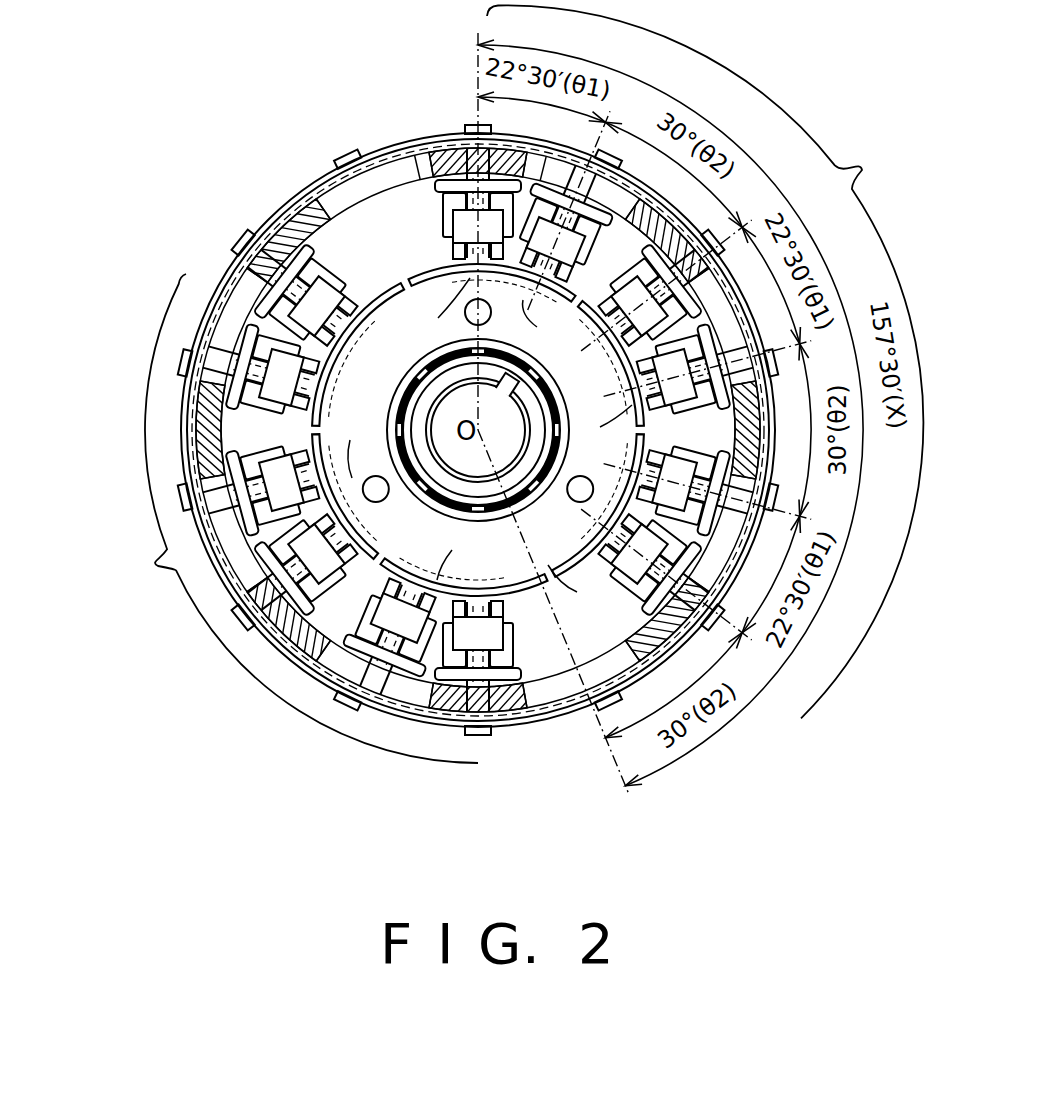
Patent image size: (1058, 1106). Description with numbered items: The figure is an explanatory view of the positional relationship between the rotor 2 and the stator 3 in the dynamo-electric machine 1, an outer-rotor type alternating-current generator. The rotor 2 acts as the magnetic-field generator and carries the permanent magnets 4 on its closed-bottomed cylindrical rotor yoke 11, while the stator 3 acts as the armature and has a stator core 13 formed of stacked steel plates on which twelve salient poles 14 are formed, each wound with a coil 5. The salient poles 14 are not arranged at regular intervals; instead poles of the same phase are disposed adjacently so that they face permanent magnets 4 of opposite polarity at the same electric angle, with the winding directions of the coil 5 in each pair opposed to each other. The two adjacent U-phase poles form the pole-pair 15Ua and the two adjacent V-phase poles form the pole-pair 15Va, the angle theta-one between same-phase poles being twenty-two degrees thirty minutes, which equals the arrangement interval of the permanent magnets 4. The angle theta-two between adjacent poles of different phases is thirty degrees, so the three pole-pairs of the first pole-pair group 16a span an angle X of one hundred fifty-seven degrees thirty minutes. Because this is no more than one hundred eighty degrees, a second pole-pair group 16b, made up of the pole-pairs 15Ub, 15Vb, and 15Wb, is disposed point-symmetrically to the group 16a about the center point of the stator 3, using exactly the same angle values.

The dynamo-electric machine 1 is at (210, 256).
The rotor 2 is at (527, 733).
The stator 3 is at (416, 455).
The permanent magnet 4 is at (350, 190).
The coil 5 is at (437, 219).
The rotor yoke 11 is at (383, 155).
The stator core 13 is at (366, 556).
The salient pole 14 is at (430, 150).
The pole-pair 15Ua is at (541, 324).
The pole-pair 15Ub is at (459, 554).
The pole-pair 15Va is at (605, 428).
The pole-pair 15Vb is at (353, 448).
The pole-pair 15Wb is at (506, 446).
The pole-pair group 16a is at (705, 361).
The pole-pair group 16b is at (287, 518).